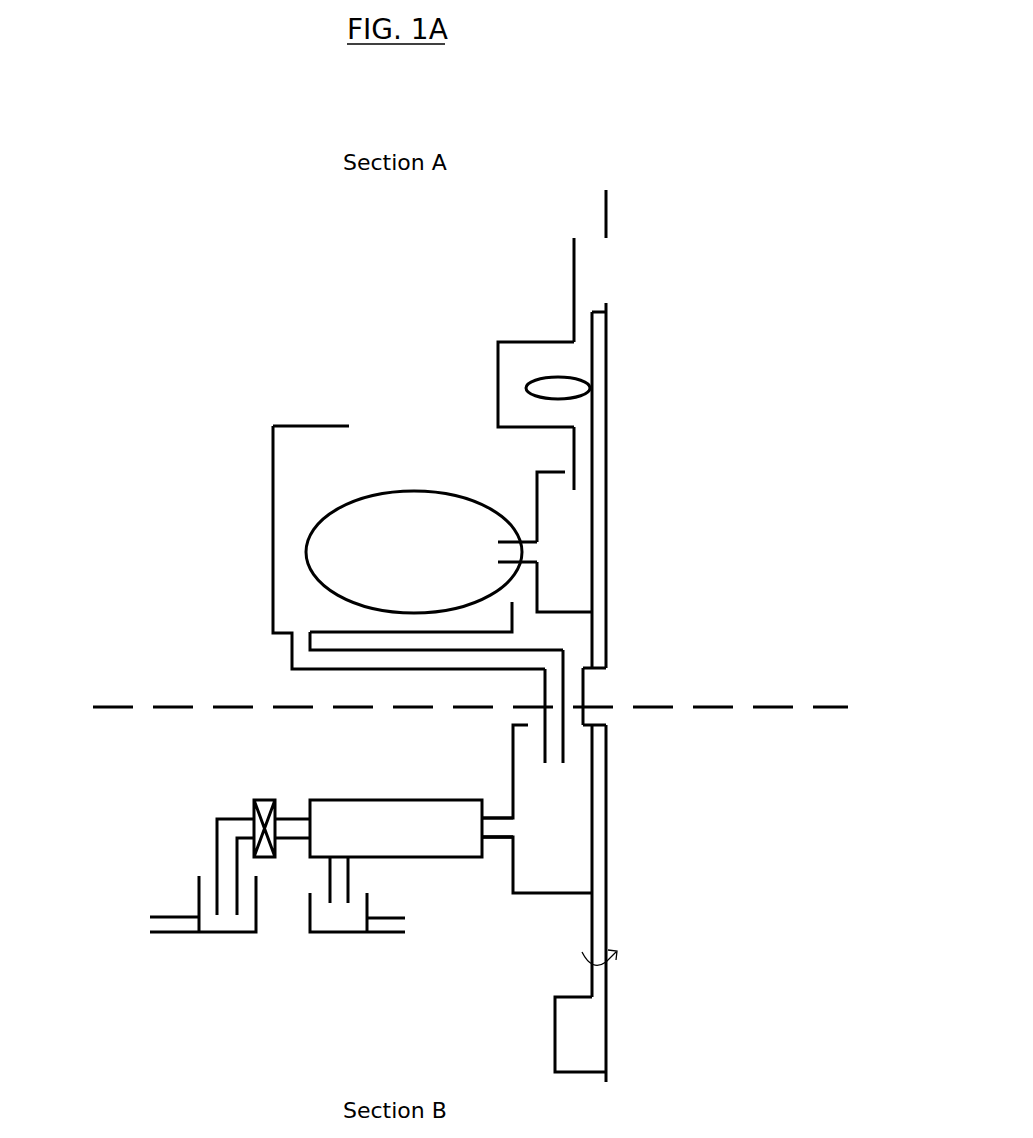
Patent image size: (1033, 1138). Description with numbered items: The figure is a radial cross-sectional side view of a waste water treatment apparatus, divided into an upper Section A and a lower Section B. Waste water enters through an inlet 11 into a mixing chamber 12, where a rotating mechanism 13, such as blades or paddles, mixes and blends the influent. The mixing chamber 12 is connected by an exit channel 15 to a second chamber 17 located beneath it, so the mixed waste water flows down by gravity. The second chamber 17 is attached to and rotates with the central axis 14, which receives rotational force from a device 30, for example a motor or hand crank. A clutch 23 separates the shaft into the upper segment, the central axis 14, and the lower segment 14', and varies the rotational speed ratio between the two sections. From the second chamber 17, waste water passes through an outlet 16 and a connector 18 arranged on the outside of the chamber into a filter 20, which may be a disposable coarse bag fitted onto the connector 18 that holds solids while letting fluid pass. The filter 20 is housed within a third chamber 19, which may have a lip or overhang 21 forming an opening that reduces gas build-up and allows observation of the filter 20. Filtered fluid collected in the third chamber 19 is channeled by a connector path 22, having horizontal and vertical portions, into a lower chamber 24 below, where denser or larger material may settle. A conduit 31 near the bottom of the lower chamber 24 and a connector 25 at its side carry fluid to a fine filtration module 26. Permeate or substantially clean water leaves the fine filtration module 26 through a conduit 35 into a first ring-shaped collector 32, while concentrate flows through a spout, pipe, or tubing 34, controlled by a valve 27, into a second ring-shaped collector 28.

The inlet 11 is at (597, 256).
The mixing chamber 12 is at (496, 372).
The rotating mechanism 13 is at (596, 388).
The central axis 14 is at (623, 485).
The exit channel 15 is at (585, 450).
The outlet 16 is at (535, 553).
The second chamber 17 is at (572, 585).
The connector 18 is at (530, 525).
The third chamber 19 is at (270, 442).
The filter 20 is at (305, 550).
The overhang 21 is at (318, 425).
The connector path 22 is at (566, 650).
The clutch 23 is at (588, 688).
The lower chamber 24 is at (572, 810).
The connector 25 is at (477, 830).
The fine filtration module 26 is at (375, 800).
The valve 27 is at (258, 800).
The second ring-shaped collector 28 is at (198, 887).
The device 30 is at (585, 1033).
The conduit 31 is at (493, 842).
The first ring-shaped collector 32 is at (337, 935).
The spout, pipe, or tubing 34 is at (222, 847).
The conduit 35 is at (328, 886).
The lower segment of central axis 14' is at (631, 903).